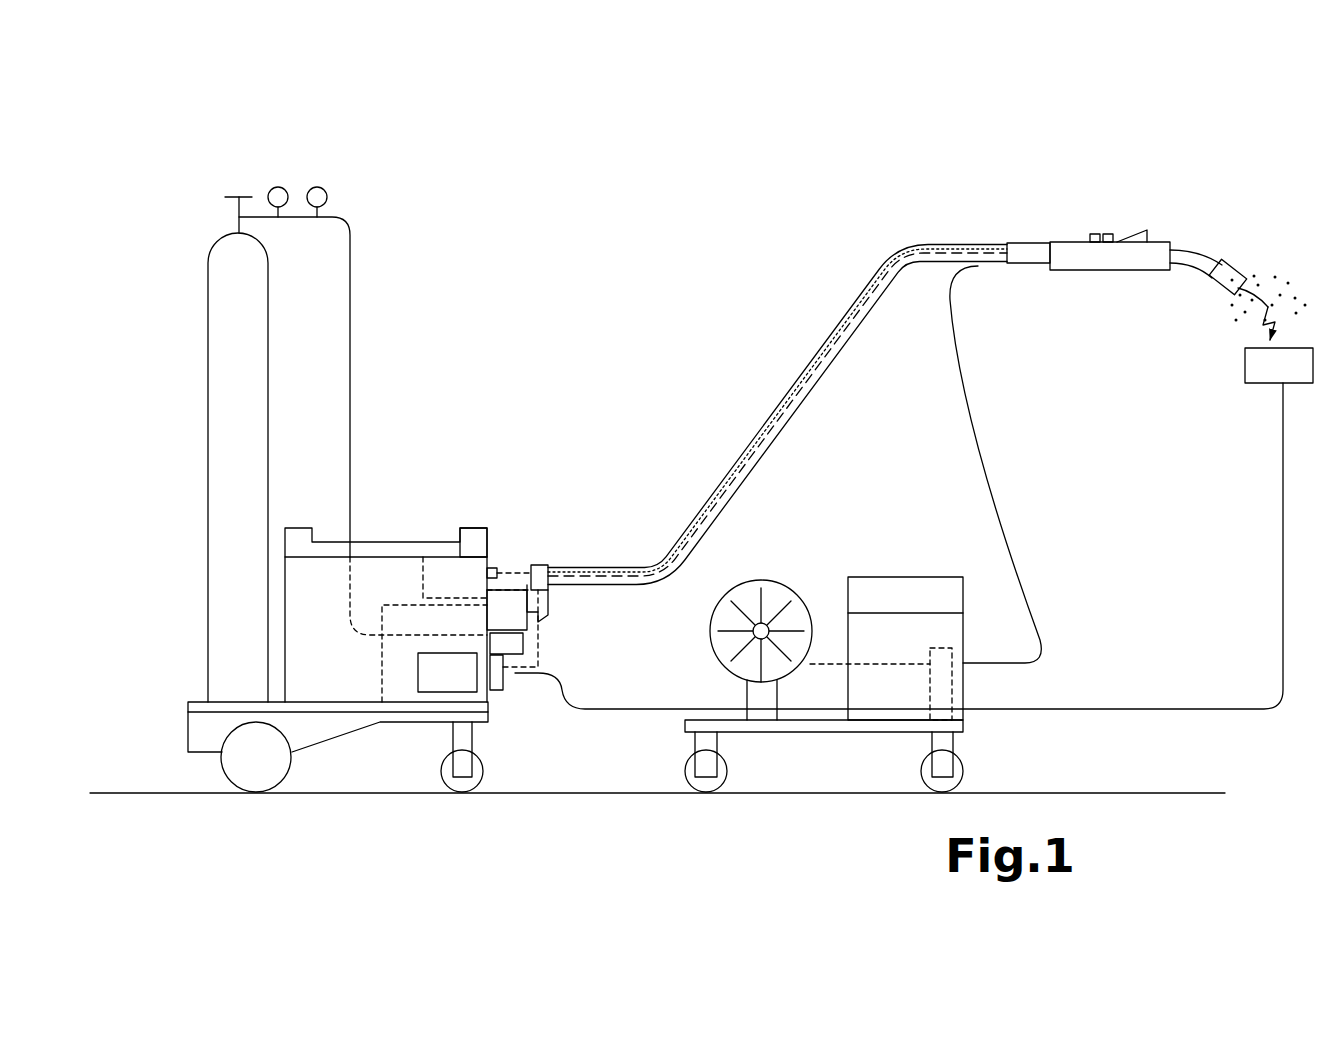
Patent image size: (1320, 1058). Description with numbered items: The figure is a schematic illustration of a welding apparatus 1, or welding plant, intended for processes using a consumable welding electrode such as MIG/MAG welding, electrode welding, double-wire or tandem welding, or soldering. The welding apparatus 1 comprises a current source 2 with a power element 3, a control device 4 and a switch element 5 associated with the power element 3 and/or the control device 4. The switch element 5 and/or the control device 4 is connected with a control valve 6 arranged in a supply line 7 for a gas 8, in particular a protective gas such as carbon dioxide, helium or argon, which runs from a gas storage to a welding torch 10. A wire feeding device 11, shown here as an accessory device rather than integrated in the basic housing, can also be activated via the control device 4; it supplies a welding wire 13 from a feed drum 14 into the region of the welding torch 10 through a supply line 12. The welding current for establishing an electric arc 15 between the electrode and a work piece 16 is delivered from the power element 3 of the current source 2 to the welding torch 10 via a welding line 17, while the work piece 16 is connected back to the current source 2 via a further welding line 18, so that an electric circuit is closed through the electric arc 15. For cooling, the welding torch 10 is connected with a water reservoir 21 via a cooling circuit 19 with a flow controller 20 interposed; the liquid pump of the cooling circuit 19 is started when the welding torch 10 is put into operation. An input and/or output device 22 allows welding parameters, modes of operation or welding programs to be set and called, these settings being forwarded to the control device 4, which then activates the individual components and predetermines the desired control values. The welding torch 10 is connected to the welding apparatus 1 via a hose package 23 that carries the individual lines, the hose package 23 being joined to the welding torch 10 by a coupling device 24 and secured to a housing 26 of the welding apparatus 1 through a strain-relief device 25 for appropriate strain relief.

The welding apparatus 1 is at (160, 178).
The current source 2 is at (440, 403).
The power element 3 is at (438, 676).
The control device 4 is at (381, 662).
The switch element 5 is at (505, 712).
The control valve 6 is at (500, 647).
The supply line 7 is at (933, 262).
The gas 8 is at (237, 313).
The welding torch 10 is at (1161, 200).
The wire feeding device 11 is at (1022, 757).
The supply line 12 is at (1010, 490).
The welding wire 13 is at (1261, 288).
The feed drum 14 is at (770, 598).
The electric arc 15 is at (1250, 334).
The work piece 16 is at (1289, 368).
The welding line 17 is at (850, 310).
The further welding line 18 is at (1283, 572).
The cooling circuit 19 is at (704, 498).
The flow controller 20 is at (518, 575).
The water reservoir 21 is at (445, 568).
The input and/or output device 22 is at (480, 540).
The hose package 23 is at (878, 228).
The coupling device 24 is at (1027, 252).
The strain-relief device 25 is at (543, 585).
The housing 26 is at (268, 562).